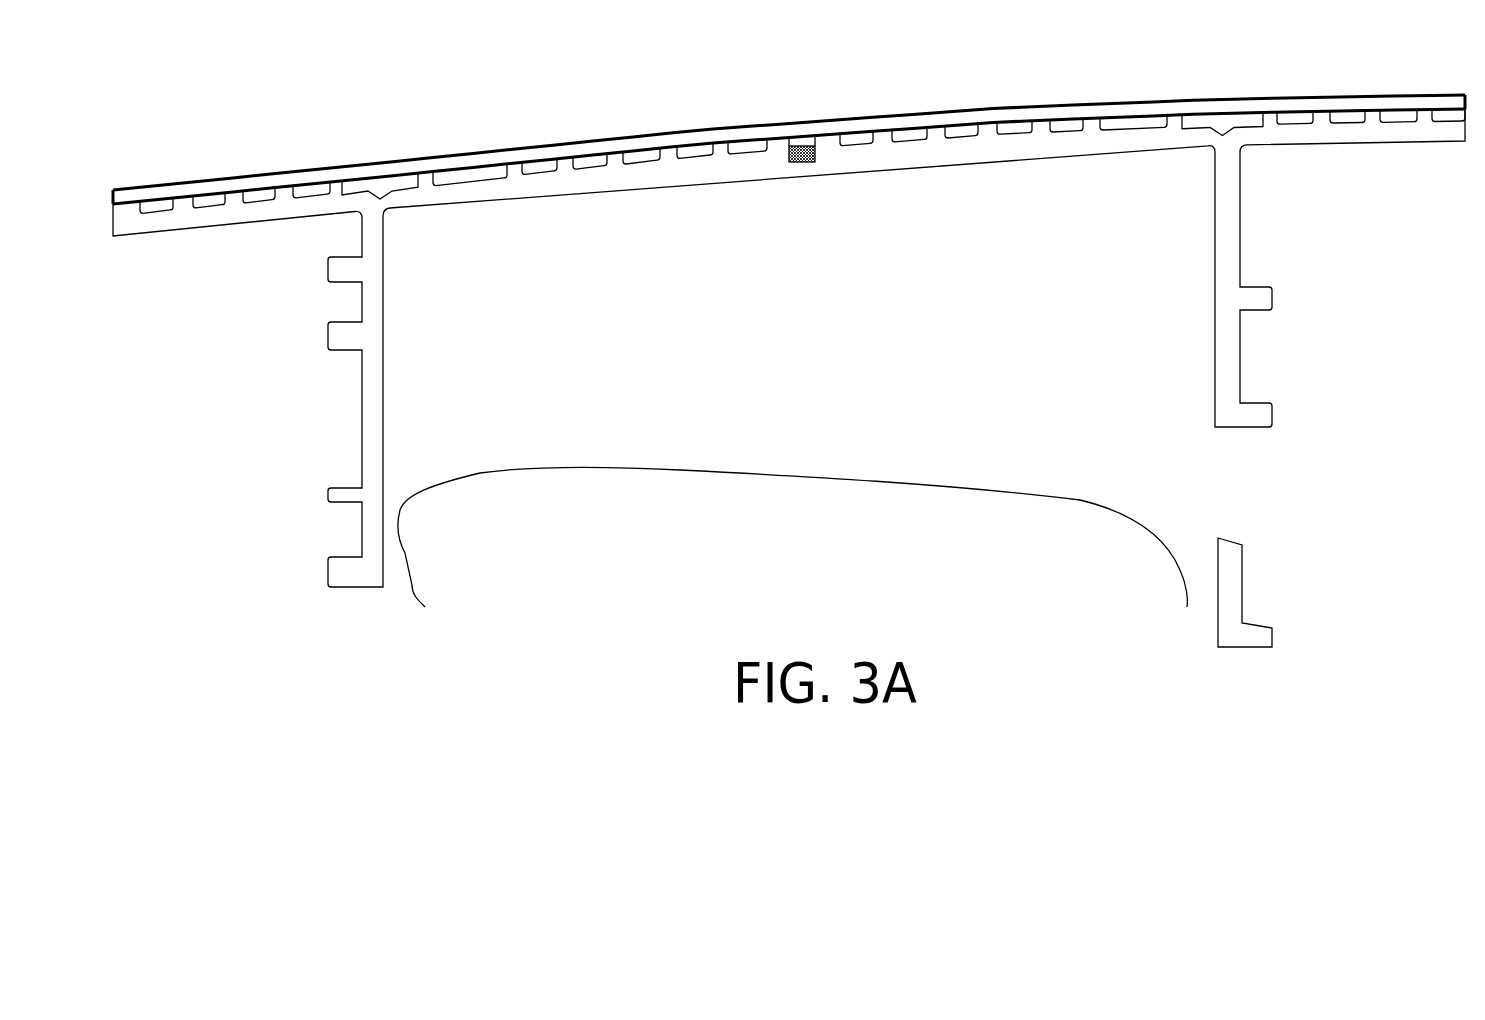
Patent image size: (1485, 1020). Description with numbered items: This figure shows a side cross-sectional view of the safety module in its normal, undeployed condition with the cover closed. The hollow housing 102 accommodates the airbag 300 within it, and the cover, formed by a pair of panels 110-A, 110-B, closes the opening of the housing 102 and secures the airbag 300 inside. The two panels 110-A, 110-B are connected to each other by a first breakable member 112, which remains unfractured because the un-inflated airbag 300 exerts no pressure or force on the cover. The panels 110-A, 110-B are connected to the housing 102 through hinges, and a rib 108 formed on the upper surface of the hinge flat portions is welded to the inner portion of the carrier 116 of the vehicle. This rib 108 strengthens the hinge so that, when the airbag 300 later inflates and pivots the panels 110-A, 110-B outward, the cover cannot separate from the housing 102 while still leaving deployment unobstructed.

The housing 102 is at (190, 198).
The rib 108 is at (1173, 118).
The panel 110-A is at (600, 167).
The panel 110-B is at (1000, 125).
The first breakable member 112 is at (790, 148).
The carrier 116 is at (1293, 95).
The airbag 300 is at (616, 474).